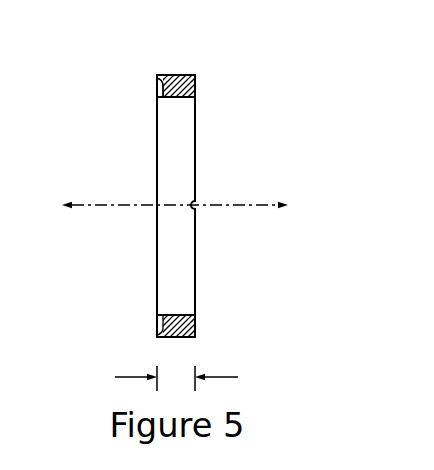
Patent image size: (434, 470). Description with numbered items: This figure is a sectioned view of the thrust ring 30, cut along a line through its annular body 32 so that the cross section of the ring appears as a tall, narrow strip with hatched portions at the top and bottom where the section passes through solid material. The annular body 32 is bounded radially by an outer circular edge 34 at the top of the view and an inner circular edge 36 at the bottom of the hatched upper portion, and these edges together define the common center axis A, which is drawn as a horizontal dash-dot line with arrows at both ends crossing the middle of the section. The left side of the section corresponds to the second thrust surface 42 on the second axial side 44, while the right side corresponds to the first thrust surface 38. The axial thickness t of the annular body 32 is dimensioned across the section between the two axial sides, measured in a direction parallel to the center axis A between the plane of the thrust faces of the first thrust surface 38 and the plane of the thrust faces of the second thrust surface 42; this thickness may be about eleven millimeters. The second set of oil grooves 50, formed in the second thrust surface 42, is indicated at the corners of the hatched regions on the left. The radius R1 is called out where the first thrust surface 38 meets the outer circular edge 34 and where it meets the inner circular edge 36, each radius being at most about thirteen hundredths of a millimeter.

The thrust ring 30 is at (286, 115).
The annular body 32 is at (185, 315).
The outer circular edge 34 is at (176, 66).
The inner circular edge 36 is at (176, 108).
The first thrust surface 38 is at (247, 273).
The second thrust surface 42 is at (148, 319).
The second axial side 44 is at (147, 100).
The second set of oil grooves 50 is at (159, 79).
The radius R1 is at (208, 97).
The center axis A is at (120, 206).
The axial thickness t is at (176, 378).